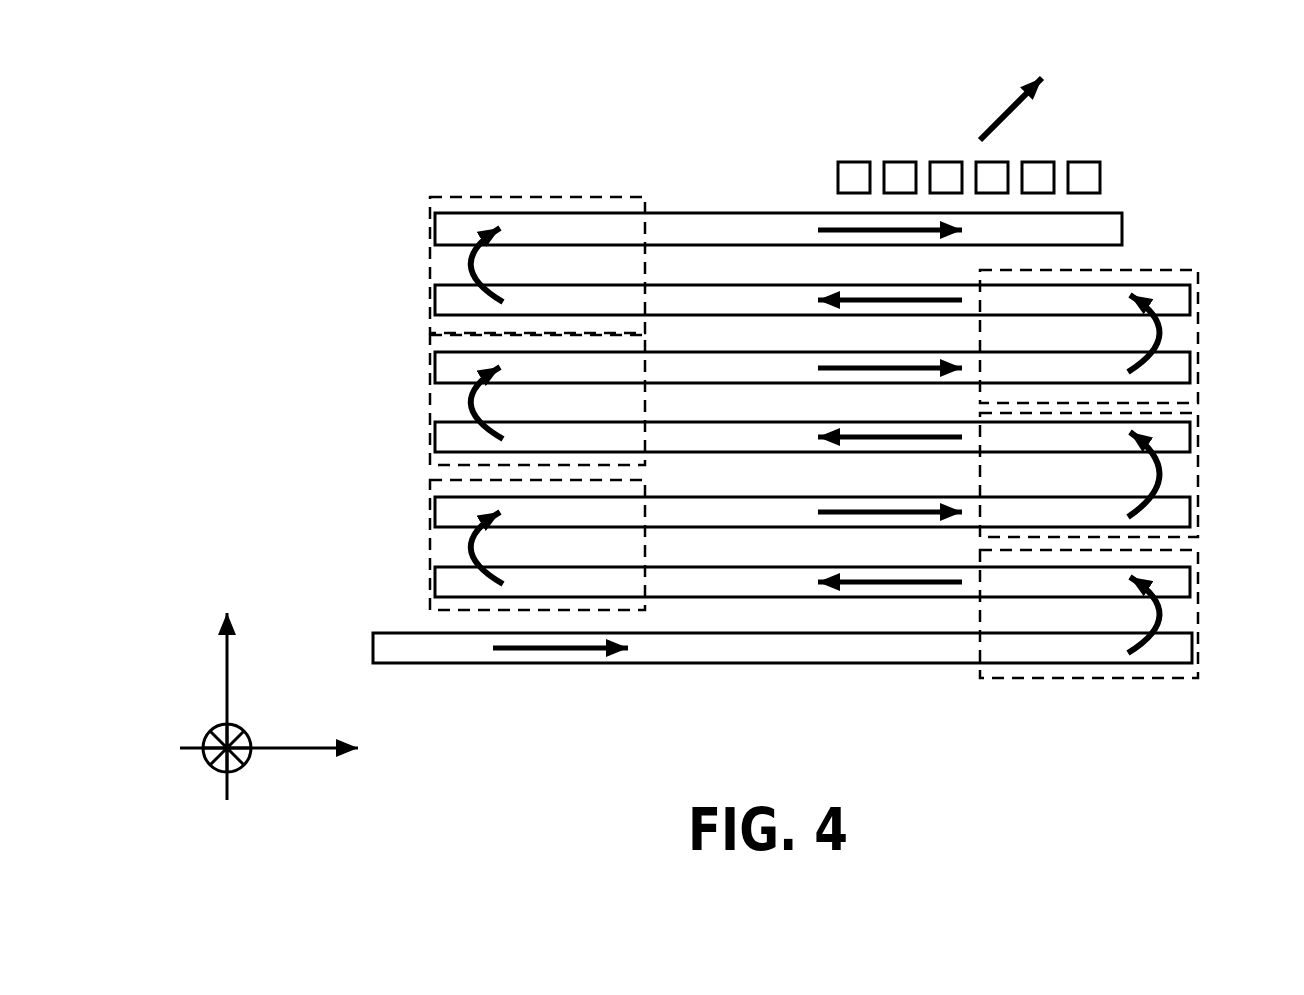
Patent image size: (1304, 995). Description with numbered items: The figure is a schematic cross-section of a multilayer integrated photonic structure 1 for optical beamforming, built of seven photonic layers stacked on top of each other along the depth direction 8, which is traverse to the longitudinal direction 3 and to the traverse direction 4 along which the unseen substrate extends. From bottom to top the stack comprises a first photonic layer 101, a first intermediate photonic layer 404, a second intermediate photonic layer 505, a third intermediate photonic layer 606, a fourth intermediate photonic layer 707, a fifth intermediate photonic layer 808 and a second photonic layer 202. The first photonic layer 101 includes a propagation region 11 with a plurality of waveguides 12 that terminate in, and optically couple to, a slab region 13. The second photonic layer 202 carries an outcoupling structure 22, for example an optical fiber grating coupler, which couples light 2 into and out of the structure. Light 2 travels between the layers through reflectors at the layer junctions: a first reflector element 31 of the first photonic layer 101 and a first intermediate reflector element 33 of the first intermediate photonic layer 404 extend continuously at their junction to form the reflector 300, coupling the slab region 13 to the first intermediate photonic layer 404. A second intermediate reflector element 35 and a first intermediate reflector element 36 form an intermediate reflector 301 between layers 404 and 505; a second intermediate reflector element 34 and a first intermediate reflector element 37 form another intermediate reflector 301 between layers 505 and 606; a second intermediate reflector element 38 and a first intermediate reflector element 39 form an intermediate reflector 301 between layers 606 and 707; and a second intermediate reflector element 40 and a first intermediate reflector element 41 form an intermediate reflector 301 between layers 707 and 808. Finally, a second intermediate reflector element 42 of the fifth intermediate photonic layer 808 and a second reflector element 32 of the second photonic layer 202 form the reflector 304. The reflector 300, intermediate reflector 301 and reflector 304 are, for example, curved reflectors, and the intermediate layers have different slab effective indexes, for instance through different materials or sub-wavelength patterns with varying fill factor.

The multilayer integrated photonic structure 1 is at (316, 262).
The light 2 is at (1017, 110).
The longitudinal direction 3 is at (314, 748).
The traverse direction 4 is at (208, 735).
The depth direction 8 is at (227, 645).
The propagation region 11 is at (452, 665).
The plurality of waveguides 12 is at (678, 644).
The slab region 13 is at (1198, 637).
The outcoupling structure 22 is at (927, 148).
The first reflector element 31 is at (1048, 645).
The second reflector element 32 is at (445, 232).
The first intermediate reflector element 33 is at (1170, 587).
The second intermediate reflector element 34 is at (1172, 518).
The second intermediate reflector element 35 is at (447, 583).
The first intermediate reflector element 36 is at (447, 513).
The first intermediate reflector element 37 is at (1170, 442).
The second intermediate reflector element 38 is at (447, 437).
The first intermediate reflector element 39 is at (447, 368).
The second intermediate reflector element 40 is at (1176, 372).
The first intermediate reflector element 41 is at (1176, 302).
The second intermediate reflector element 42 is at (445, 297).
The first photonic layer 101 is at (428, 659).
The second photonic layer 202 is at (1110, 241).
The reflector 300 is at (1158, 678).
The intermediate reflector 301 is at (430, 447).
The reflector 304 is at (430, 310).
The first intermediate photonic layer 404 is at (802, 593).
The second intermediate photonic layer 505 is at (802, 523).
The third intermediate photonic layer 606 is at (802, 448).
The fourth intermediate photonic layer 707 is at (802, 378).
The fifth intermediate photonic layer 808 is at (802, 311).